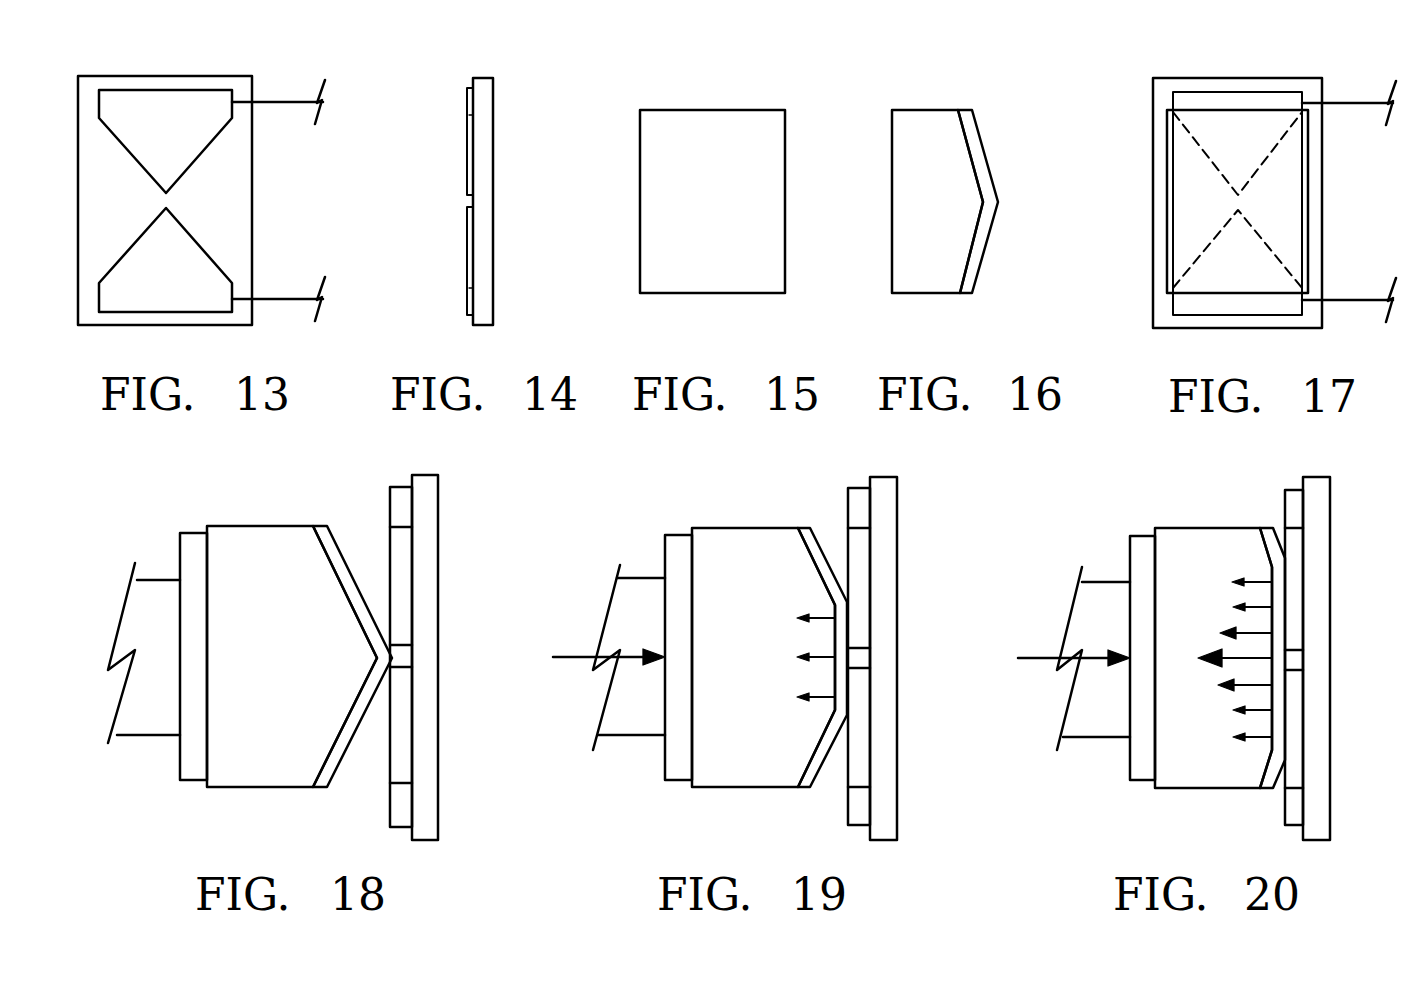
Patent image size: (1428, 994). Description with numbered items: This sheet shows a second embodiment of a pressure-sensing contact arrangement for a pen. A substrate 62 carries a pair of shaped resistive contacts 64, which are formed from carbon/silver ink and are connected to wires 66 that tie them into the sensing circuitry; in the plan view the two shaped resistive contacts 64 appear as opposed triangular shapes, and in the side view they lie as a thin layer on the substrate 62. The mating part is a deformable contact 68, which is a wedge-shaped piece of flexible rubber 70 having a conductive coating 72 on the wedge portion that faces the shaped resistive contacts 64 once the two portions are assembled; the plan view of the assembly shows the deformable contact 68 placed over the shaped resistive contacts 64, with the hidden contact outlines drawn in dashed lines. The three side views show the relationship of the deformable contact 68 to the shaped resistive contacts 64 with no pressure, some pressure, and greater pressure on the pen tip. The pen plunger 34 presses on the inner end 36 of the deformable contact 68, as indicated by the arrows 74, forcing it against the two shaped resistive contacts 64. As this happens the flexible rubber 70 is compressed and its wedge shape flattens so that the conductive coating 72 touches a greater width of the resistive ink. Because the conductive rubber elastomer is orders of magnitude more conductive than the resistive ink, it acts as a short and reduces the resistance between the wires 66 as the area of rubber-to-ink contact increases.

In FIG. 18, the pen plunger 34 is at (138, 723).
In FIG. 19, the pen plunger 34 is at (627, 723).
In FIG. 20, the pen plunger 34 is at (1090, 723).
In FIG. 18, the inner end 36 is at (193, 772).
In FIG. 19, the inner end 36 is at (678, 772).
In FIG. 20, the inner end 36 is at (1143, 772).
In FIG. 13, the substrate 62 is at (252, 207).
In FIG. 14, the substrate 62 is at (487, 207).
In FIG. 17, the substrate 62 is at (1323, 212).
In FIG. 18, the substrate 62 is at (430, 638).
In FIG. 19, the substrate 62 is at (887, 640).
In FIG. 20, the substrate 62 is at (1322, 642).
In FIG. 13, the shaped resistive contacts 64 is at (190, 142).
In FIG. 14, the shaped resistive contacts 64 is at (467, 138).
In FIG. 17, the shaped resistive contacts 64 is at (1258, 145).
In FIG. 18, the shaped resistive contacts 64 is at (402, 580).
In FIG. 19, the shaped resistive contacts 64 is at (862, 580).
In FIG. 20, the shaped resistive contacts 64 is at (1297, 583).
In FIG. 13, the wires 66 is at (296, 99).
In FIG. 17, the wires 66 is at (1368, 101).
In FIG. 15, the deformable contact 68 is at (753, 207).
In FIG. 16, the deformable contact 68 is at (977, 214).
In FIG. 17, the deformable contact 68 is at (1185, 192).
In FIG. 18, the deformable contact 68 is at (260, 638).
In FIG. 19, the deformable contact 68 is at (730, 639).
In FIG. 20, the deformable contact 68 is at (1180, 639).
In FIG. 15, the flexible rubber 70 is at (758, 130).
In FIG. 16, the flexible rubber 70 is at (932, 130).
In FIG. 17, the flexible rubber 70 is at (1173, 132).
In FIG. 18, the flexible rubber 70 is at (286, 772).
In FIG. 19, the flexible rubber 70 is at (770, 773).
In FIG. 20, the flexible rubber 70 is at (1232, 773).
In FIG. 16, the conductive coating 72 is at (978, 157).
In FIG. 18, the conductive coating 72 is at (332, 550).
In FIG. 19, the conductive coating 72 is at (808, 535).
In FIG. 20, the conductive coating 72 is at (1267, 537).
In FIG. 19, the arrows 74 is at (568, 660).
In FIG. 20, the arrows 74 is at (1032, 660).